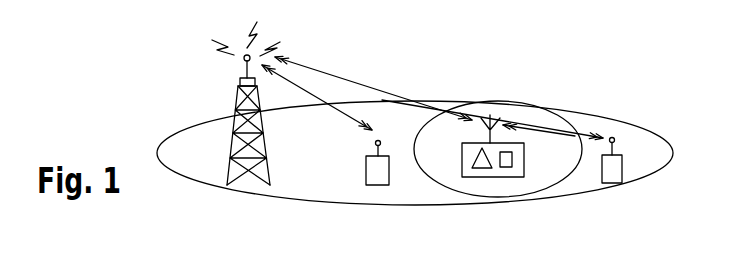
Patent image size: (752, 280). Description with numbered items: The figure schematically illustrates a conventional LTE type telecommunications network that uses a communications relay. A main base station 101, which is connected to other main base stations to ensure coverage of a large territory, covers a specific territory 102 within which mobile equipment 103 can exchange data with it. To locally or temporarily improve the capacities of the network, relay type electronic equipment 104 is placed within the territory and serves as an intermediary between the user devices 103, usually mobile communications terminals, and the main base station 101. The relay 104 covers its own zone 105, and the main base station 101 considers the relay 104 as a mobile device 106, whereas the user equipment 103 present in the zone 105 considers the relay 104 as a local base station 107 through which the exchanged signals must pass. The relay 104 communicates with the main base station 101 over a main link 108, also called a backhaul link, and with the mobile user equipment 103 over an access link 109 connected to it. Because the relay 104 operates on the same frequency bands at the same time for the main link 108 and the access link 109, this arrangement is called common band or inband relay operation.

The main base station 101 is at (236, 100).
The specific territory 102 is at (192, 137).
The mobile equipment 103 is at (378, 180).
The relay type electronic equipment 104 is at (493, 178).
The zone 105 is at (647, 150).
The mobile device 106 is at (505, 167).
The local base station 107 is at (478, 170).
The main link 108 is at (350, 80).
The access link 109 is at (541, 124).